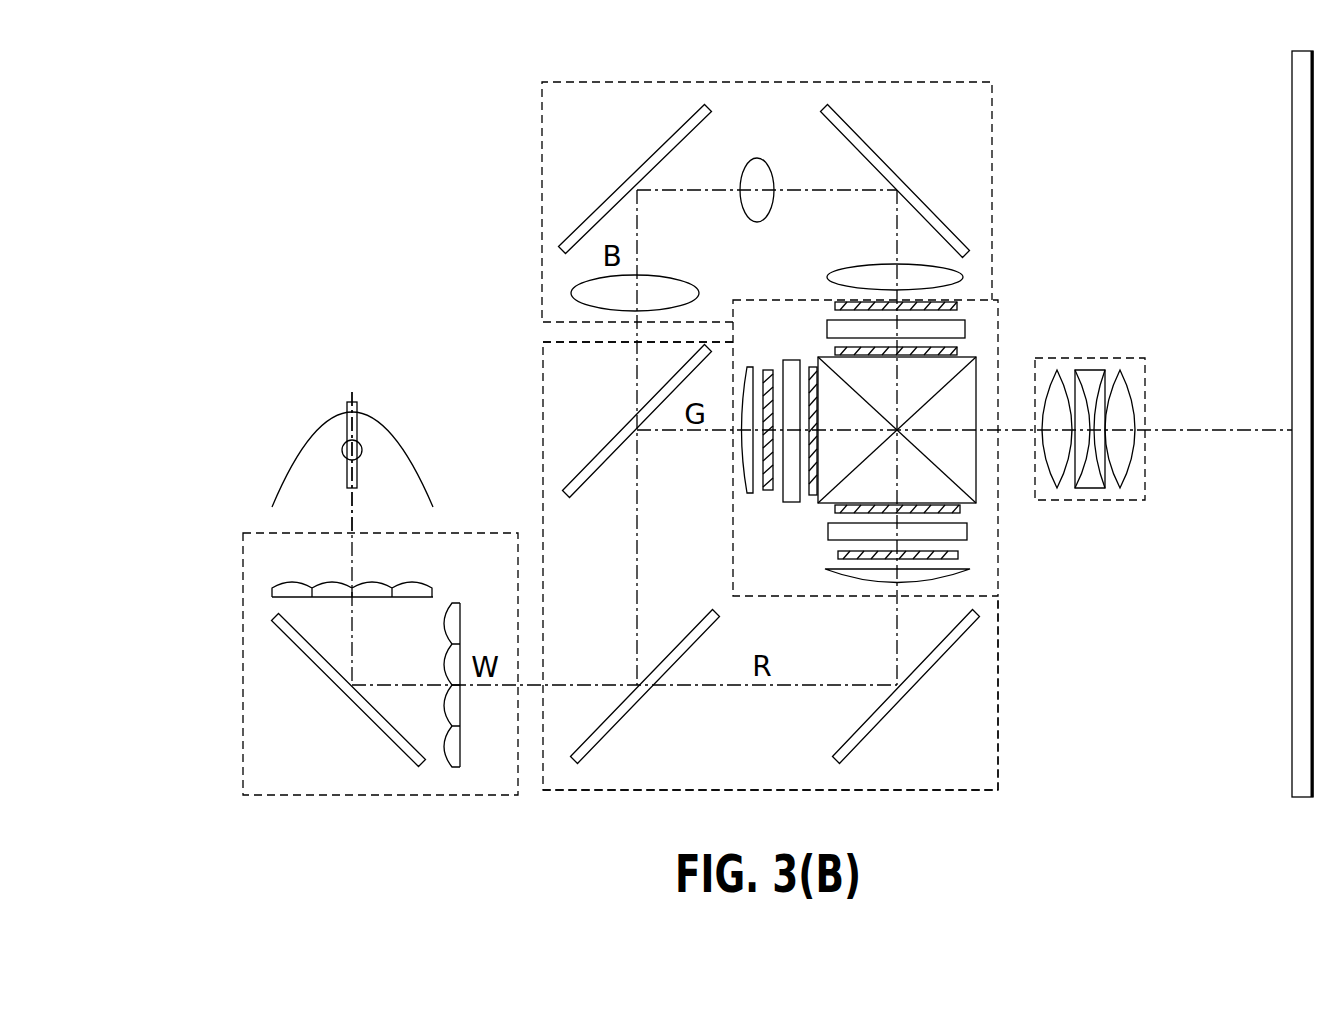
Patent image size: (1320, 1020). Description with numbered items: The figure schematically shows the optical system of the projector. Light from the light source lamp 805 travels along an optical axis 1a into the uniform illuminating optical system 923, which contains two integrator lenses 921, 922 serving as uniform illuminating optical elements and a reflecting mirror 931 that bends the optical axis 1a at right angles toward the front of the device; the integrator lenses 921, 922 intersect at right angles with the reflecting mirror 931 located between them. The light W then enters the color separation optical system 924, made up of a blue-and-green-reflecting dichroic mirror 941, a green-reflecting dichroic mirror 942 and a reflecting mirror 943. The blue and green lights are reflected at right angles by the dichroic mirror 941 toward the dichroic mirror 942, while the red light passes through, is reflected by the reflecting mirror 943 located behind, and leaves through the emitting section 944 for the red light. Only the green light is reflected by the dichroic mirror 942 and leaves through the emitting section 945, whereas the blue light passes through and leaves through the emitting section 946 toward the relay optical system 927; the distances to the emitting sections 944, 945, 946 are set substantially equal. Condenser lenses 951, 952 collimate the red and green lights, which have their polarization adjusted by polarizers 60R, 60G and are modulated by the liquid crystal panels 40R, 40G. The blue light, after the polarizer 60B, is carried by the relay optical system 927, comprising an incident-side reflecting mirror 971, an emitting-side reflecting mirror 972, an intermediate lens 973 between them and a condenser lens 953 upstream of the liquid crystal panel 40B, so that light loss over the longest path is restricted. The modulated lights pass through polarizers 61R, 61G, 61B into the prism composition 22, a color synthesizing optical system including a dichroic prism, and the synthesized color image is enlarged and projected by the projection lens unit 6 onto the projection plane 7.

The light source lamp 805 is at (296, 445).
The optical axis 1a is at (352, 510).
The uniform illuminating optical system 923 is at (243, 600).
The integrator lens 921 is at (403, 600).
The integrator lens 922 is at (453, 603).
The reflecting mirror 931 is at (348, 702).
The color separation optical system 924 is at (543, 376).
The relay optical system 927 is at (542, 228).
The emitting section for the red light 944 is at (858, 600).
The emitting section for the green light 945 is at (733, 503).
The emitting section for the blue light 946 is at (592, 345).
The blue-and-green-reflecting dichroic mirror 941 is at (622, 722).
The green-reflecting dichroic mirror 942 is at (598, 480).
The reflecting mirror 943 is at (882, 722).
The incident-side reflecting mirror 971 is at (627, 182).
The emitting-side reflecting mirror 972 is at (900, 178).
The intermediate lens 973 is at (752, 158).
The condenser lens 951 is at (965, 575).
The condenser lens 952 is at (745, 367).
The condenser lens 953 is at (853, 265).
The polarizer 60G is at (768, 490).
The liquid crystal panel 40G is at (790, 360).
The polarizer 61G is at (812, 495).
The polarizer 60B is at (957, 306).
The liquid crystal panel 40B is at (965, 330).
The polarizer 61B is at (957, 351).
The polarizer 60R is at (958, 555).
The liquid crystal panel 40R is at (967, 532).
The polarizer 61R is at (962, 509).
The prism composition 22 is at (978, 455).
The projection lens unit 6 is at (1147, 478).
The projection plane 7 is at (1292, 130).